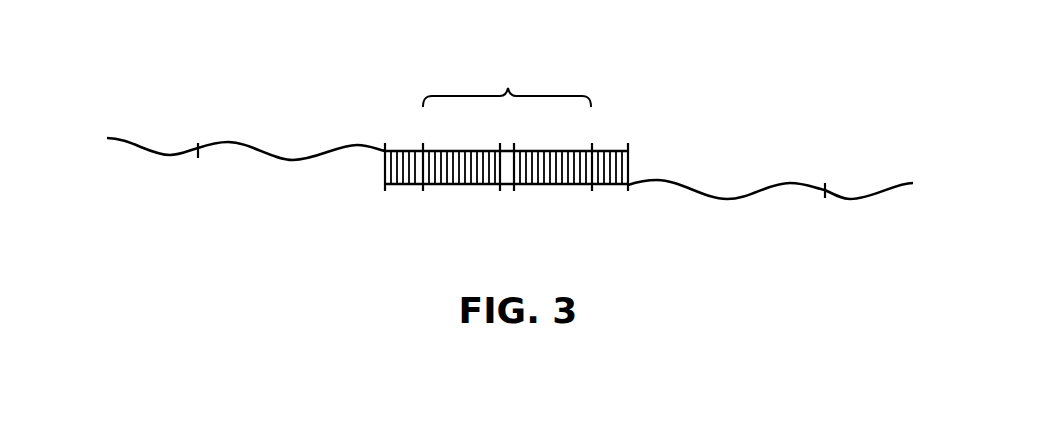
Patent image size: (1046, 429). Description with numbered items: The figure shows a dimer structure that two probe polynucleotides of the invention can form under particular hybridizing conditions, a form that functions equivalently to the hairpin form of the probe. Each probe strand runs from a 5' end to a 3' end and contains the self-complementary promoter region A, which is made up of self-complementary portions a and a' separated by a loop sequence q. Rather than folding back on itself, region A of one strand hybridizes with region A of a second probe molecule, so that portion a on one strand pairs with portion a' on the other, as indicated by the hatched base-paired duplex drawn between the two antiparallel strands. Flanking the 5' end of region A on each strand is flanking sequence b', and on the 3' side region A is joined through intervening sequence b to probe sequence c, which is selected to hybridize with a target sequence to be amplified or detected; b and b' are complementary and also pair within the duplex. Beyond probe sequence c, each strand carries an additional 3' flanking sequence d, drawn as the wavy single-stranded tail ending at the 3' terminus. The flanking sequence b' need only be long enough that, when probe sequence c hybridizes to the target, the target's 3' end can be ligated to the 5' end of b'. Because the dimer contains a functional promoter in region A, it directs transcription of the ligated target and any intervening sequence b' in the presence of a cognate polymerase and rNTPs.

The self-complementary promoter region A is at (507, 84).
The self-complementary portion a is at (507, 168).
The self-complementary portion a' is at (507, 168).
The intervening sequence b is at (506, 168).
The flanking sequence b' is at (506, 168).
The loop sequence q is at (507, 168).
The probe sequence c is at (511, 169).
The 3' flanking sequence d is at (510, 169).
The 3' end 3' is at (510, 162).
The 5' end 5' is at (508, 166).